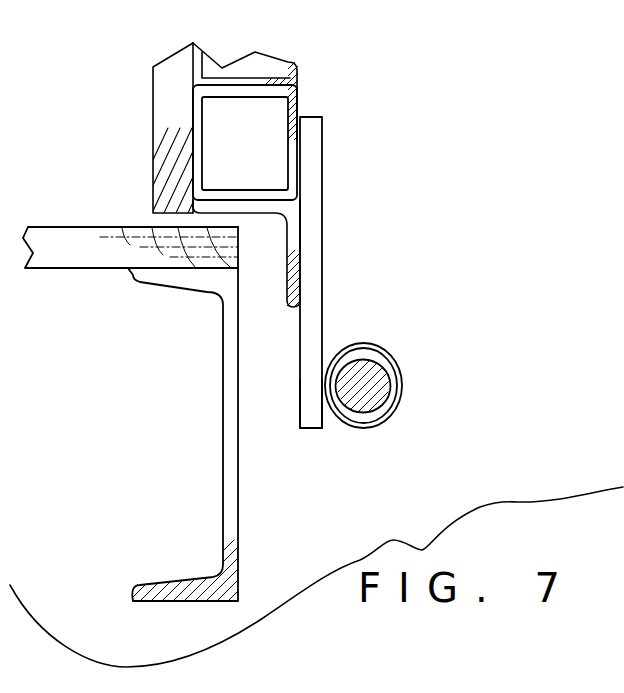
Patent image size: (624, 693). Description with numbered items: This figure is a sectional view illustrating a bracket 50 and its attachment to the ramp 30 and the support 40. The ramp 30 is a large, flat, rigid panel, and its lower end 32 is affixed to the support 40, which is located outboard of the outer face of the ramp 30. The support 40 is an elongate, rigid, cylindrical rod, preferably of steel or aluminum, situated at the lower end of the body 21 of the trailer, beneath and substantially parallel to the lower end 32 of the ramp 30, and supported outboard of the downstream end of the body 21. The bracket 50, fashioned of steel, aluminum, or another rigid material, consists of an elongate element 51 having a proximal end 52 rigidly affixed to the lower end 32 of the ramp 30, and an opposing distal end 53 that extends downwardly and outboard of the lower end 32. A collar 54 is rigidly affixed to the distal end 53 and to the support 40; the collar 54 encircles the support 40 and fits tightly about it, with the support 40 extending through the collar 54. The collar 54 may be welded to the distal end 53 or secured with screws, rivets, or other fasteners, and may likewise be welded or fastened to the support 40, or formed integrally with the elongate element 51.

The body 21 is at (238, 542).
The ramp 30 is at (300, 68).
The lower end 32 is at (300, 97).
The support 40 is at (387, 408).
The bracket 50 is at (322, 217).
The elongate element 51 is at (318, 252).
The proximal end 52 is at (313, 133).
The distal end 53 is at (307, 378).
The collar 54 is at (402, 386).